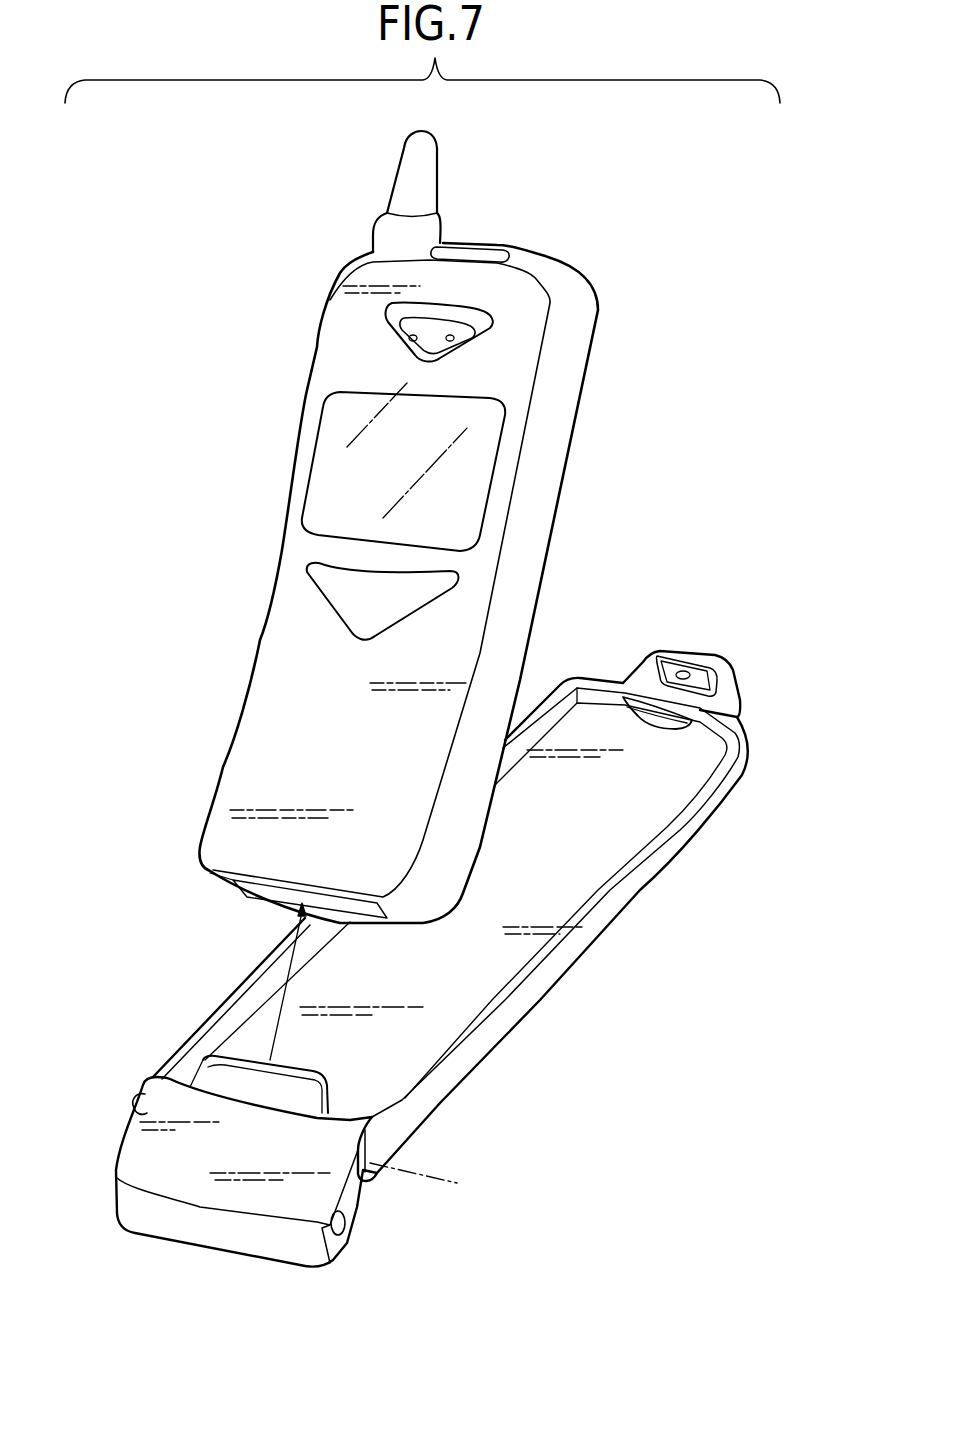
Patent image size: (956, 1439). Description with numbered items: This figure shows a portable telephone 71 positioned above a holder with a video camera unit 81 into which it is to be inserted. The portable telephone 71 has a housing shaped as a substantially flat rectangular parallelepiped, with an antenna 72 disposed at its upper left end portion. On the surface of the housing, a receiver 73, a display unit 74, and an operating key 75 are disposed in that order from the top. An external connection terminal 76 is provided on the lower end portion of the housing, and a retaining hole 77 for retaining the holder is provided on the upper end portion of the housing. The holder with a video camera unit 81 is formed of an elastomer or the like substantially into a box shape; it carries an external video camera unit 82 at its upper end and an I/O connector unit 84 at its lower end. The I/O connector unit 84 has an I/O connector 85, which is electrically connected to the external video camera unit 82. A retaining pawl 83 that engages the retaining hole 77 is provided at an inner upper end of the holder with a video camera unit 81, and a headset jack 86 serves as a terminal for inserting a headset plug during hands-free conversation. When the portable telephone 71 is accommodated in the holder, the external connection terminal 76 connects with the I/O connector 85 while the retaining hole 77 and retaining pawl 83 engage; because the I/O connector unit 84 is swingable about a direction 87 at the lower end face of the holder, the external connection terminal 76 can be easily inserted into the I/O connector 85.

The portable telephone 71 is at (276, 423).
The antenna 72 is at (405, 178).
The receiver 73 is at (447, 326).
The display unit 74 is at (320, 488).
The operating key 75 is at (347, 618).
The external connection terminal 76 is at (260, 905).
The retaining hole 77 is at (477, 255).
The holder with a video camera unit 81 is at (549, 998).
The external video camera unit 82 is at (650, 662).
The retaining pawl 83 is at (657, 722).
The I/O connector unit 84 is at (197, 1228).
The I/O connector 85 is at (313, 1100).
The headset jack 86 is at (347, 1233).
The direction 87 is at (427, 1182).